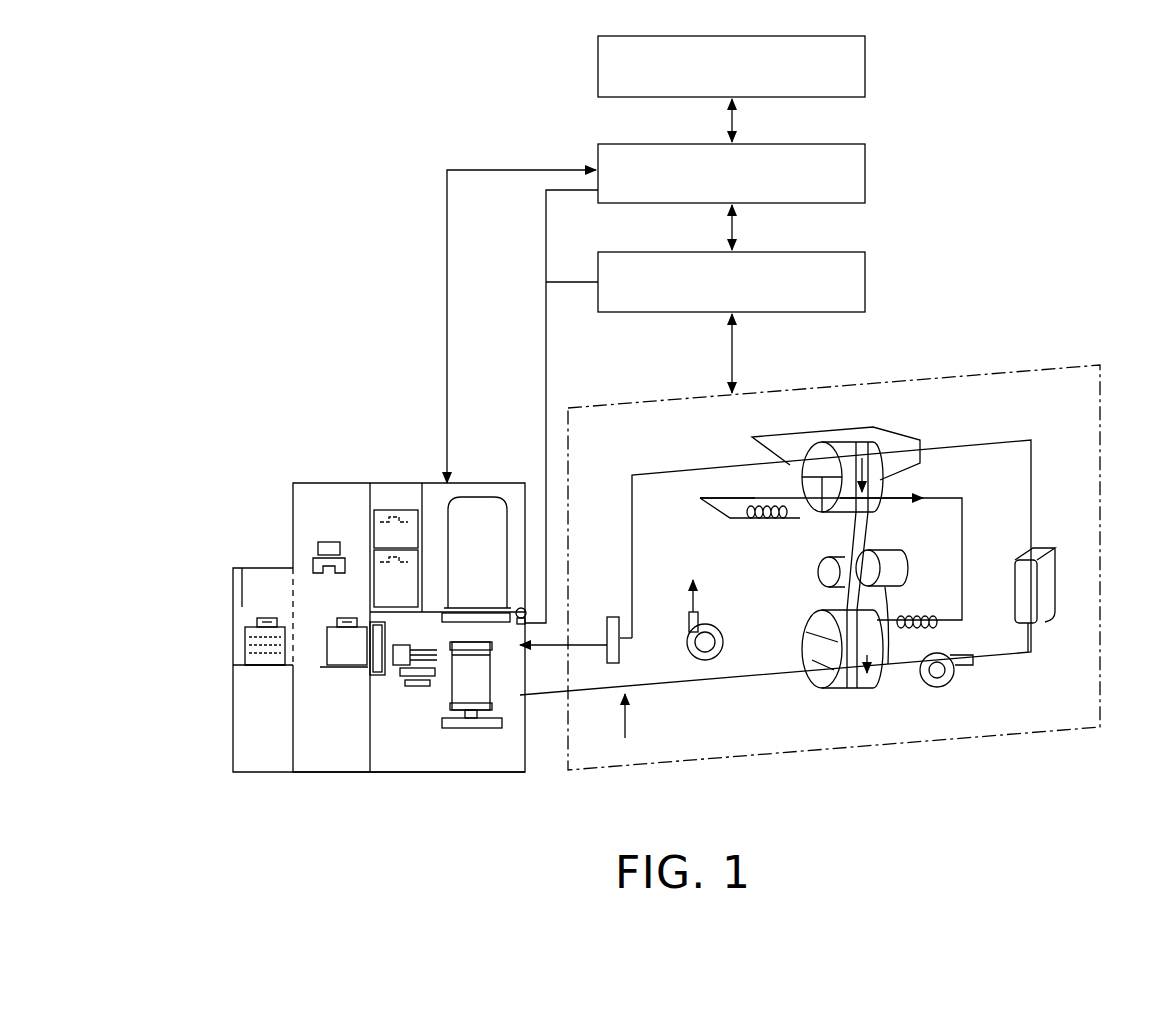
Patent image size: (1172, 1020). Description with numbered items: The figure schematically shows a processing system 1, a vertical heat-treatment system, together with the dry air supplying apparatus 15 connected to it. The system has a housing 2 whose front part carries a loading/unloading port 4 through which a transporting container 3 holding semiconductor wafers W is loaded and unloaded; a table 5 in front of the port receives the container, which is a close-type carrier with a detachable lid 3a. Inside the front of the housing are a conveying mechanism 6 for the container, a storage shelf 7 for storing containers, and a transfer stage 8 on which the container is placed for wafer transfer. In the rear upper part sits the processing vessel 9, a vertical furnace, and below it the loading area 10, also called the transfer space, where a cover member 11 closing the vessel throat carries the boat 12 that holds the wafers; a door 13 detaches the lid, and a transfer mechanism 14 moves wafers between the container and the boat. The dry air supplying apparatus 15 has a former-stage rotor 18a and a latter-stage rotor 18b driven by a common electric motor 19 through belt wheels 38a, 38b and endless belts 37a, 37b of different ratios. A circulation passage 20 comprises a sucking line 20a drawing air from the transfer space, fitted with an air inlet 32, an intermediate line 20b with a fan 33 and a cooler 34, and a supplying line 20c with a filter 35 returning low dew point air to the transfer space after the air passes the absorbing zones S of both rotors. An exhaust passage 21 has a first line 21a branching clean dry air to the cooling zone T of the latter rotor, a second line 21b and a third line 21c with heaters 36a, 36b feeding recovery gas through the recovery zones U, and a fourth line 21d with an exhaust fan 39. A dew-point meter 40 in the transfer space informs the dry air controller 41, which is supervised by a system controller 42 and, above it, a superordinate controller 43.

The processing system 1 is at (283, 443).
The housing 2 is at (340, 483).
The transporting container 3 is at (243, 641).
The detachable lid 3a is at (285, 668).
The loading/unloading port 4 is at (284, 612).
The table 5 is at (243, 743).
The conveying mechanism 6 is at (320, 540).
The storage shelf 7 is at (392, 545).
The transfer stage 8 is at (331, 669).
The processing vessel 9 is at (508, 496).
The loading area 10 is at (398, 772).
The cover member 11 is at (490, 728).
The boat 12 is at (494, 690).
The door 13 is at (383, 678).
The transfer mechanism 14 is at (410, 690).
The dry air supplying apparatus 15 is at (940, 366).
The former-stage rotor 18a is at (848, 692).
The latter-stage rotor 18b is at (903, 431).
The electric motor 19 is at (900, 568).
The circulation passage 20 is at (1036, 490).
The sucking line 20a is at (758, 678).
The intermediate line 20b is at (1032, 521).
The supplying line 20c is at (670, 475).
The exhaust passage 21 is at (967, 527).
The first line 21a is at (840, 437).
The second line 21b is at (702, 502).
The third line 21c is at (962, 580).
The fourth line 21d is at (737, 648).
The air inlet 32 is at (630, 728).
The fan 33 is at (950, 690).
The cooler 34 is at (1056, 590).
The filter 35 is at (612, 617).
The heater 36a is at (760, 521).
The heater 36b is at (940, 629).
The endless belt 37a is at (840, 690).
The endless belt 37b is at (866, 528).
The belt wheel 38a is at (816, 575).
The belt wheel 38b is at (858, 689).
The exhaust fan 39 is at (697, 630).
The dew-point meter 40 is at (523, 606).
The dry air controller 41 is at (867, 280).
The system controller 42 is at (867, 172).
The superordinate controller 43 is at (867, 64).
The absorbing zone S is at (812, 442).
The cooling zone T is at (790, 482).
The recovery zone U is at (830, 520).
The semiconductor wafer W is at (243, 655).